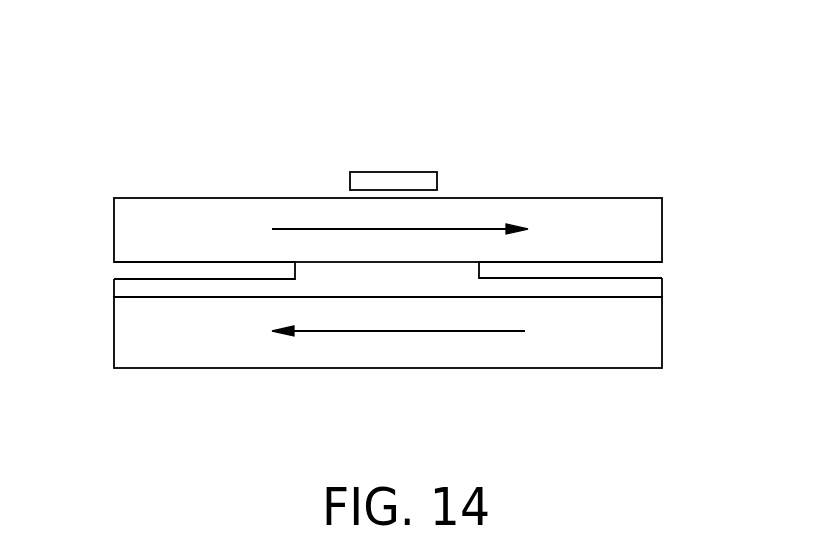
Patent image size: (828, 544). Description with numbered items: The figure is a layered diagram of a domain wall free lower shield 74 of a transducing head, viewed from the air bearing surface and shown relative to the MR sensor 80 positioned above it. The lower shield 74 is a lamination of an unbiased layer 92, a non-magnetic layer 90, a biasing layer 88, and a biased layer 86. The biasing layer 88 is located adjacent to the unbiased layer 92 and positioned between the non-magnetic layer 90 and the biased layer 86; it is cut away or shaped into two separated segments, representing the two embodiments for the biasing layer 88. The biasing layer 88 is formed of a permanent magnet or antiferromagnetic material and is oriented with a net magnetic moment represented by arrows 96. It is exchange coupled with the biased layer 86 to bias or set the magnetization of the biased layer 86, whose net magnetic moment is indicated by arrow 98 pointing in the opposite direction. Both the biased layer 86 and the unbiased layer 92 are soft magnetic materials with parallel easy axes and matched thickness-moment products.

The lower shield 74 is at (96, 300).
The MR sensor 80 is at (388, 170).
The biased layer 86 is at (594, 334).
The biasing layer 88 is at (182, 268).
The non-magnetic layer 90 is at (162, 295).
The unbiased layer 92 is at (636, 229).
The arrows representing net magnetic moment of biasing layer 96 is at (283, 228).
The arrow representing net magnetic moment of biased layer 98 is at (357, 332).